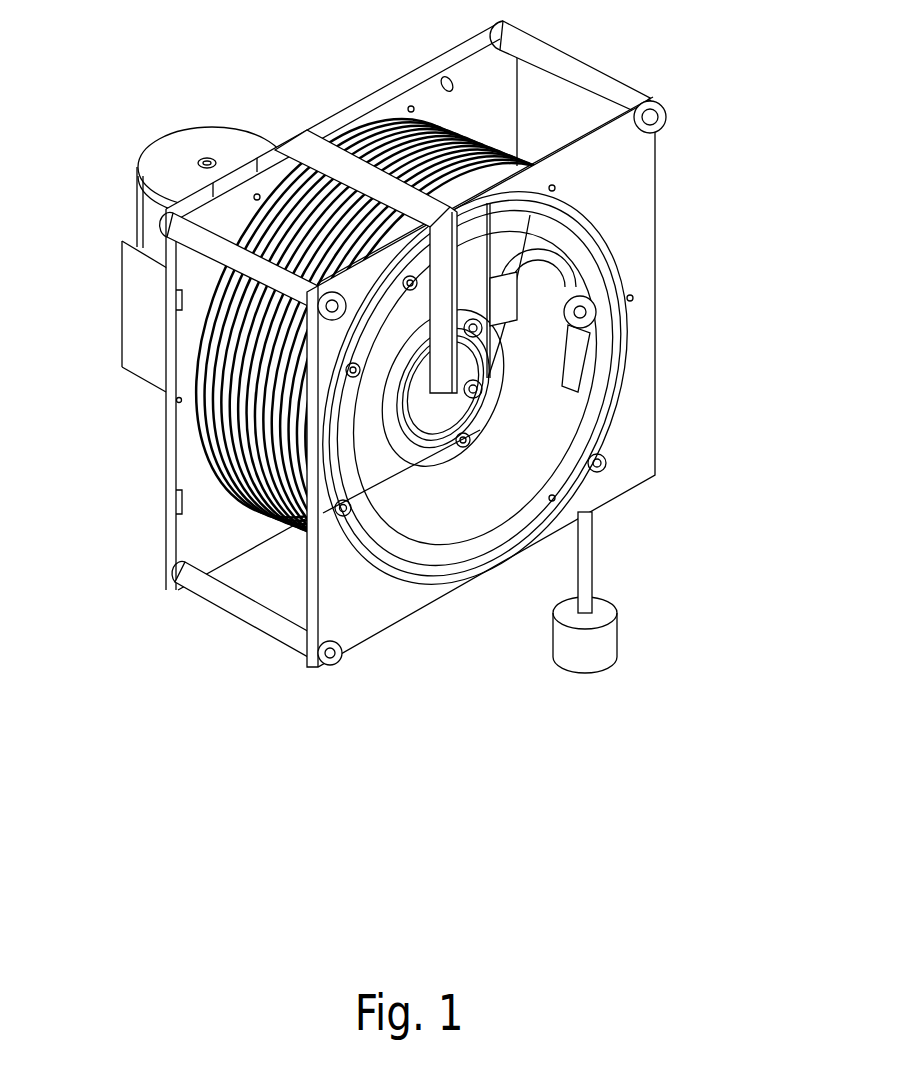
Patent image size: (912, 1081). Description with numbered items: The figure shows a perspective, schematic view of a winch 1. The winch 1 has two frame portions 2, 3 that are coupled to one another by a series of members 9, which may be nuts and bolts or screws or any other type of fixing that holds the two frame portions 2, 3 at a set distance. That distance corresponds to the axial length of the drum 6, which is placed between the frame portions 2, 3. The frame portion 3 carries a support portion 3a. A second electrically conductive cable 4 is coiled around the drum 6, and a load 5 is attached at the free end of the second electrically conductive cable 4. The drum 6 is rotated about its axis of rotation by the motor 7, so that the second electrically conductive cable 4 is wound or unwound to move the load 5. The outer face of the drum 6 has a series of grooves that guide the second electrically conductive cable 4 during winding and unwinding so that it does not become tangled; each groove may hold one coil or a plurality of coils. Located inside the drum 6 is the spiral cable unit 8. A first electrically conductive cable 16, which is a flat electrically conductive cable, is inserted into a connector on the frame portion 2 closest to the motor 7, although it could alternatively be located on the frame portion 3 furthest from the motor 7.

The winch 1 is at (416, 349).
The frame portion 2 is at (360, 99).
The frame portion 3 is at (660, 227).
The support portion 3a is at (478, 368).
The second electrically conductive cable 4 is at (597, 536).
The load 5 is at (622, 640).
The drum 6 is at (200, 456).
The motor 7 is at (112, 242).
The spiral cable unit 8 is at (503, 347).
The members 9 is at (598, 70).
The first electrically conductive cable 16 is at (371, 177).